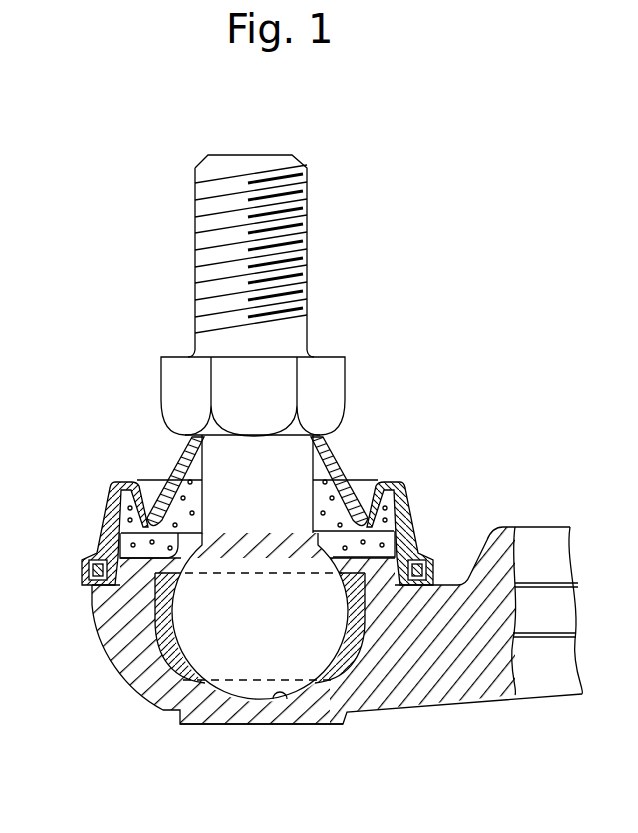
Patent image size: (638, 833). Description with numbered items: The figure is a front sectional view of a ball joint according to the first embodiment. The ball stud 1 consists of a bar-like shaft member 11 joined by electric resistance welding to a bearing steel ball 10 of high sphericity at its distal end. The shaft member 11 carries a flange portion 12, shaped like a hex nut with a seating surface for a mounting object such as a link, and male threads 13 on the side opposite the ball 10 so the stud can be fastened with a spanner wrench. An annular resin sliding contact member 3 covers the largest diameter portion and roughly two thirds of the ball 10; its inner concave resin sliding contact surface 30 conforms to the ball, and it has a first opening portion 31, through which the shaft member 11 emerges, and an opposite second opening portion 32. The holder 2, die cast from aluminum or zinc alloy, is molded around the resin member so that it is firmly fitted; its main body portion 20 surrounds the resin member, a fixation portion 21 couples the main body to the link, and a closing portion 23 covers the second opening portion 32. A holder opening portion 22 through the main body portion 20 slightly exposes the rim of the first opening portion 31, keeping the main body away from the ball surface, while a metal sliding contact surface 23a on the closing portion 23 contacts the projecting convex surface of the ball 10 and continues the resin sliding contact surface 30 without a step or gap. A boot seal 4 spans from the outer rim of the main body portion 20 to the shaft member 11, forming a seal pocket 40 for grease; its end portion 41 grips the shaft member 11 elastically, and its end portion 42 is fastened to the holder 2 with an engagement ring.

The ball stud 1 is at (229, 462).
The holder 2 is at (312, 631).
The resin sliding contact member 3 is at (360, 613).
The boot seal 4 is at (248, 492).
The ball 10 is at (229, 621).
The shaft member 11 is at (300, 473).
The flange portion 12 is at (330, 380).
The male threads 13 is at (297, 218).
The main body portion 20 is at (112, 630).
The fixation portion 21 is at (495, 531).
The holder opening portion 22 is at (168, 534).
The closing portion 23 is at (233, 713).
The metal sliding contact surface 23a is at (287, 695).
The resin sliding contact surface 30 is at (168, 600).
The first opening portion 31 is at (238, 573).
The second opening portion 32 is at (255, 683).
The seal pocket 40 is at (378, 530).
The end portion on the ball stud side 41 is at (168, 436).
The end portion on the holder side 42 is at (90, 563).